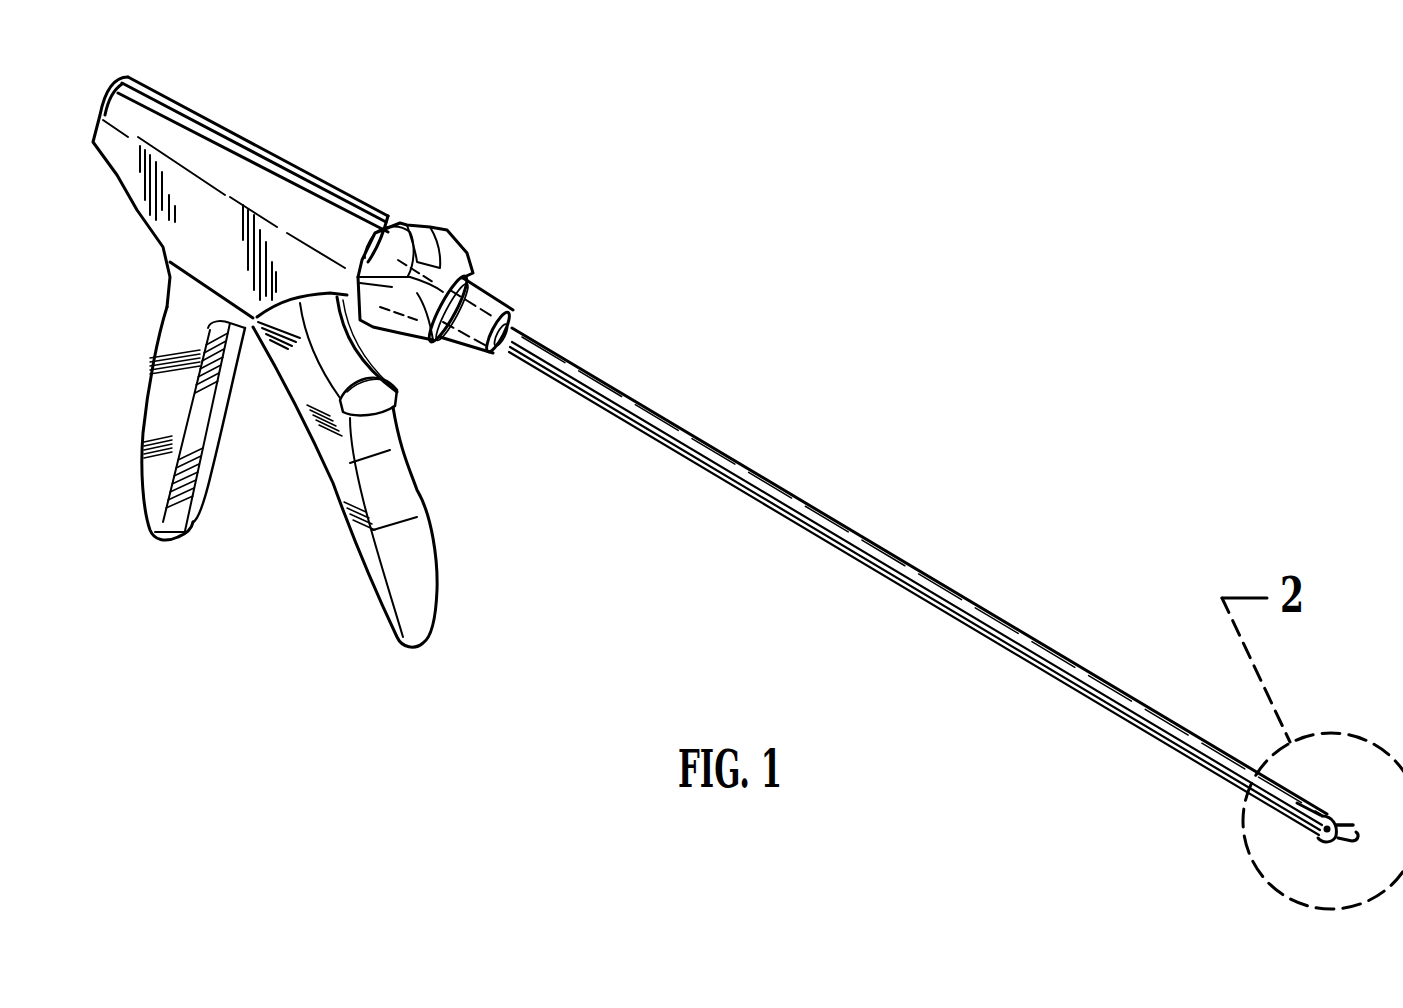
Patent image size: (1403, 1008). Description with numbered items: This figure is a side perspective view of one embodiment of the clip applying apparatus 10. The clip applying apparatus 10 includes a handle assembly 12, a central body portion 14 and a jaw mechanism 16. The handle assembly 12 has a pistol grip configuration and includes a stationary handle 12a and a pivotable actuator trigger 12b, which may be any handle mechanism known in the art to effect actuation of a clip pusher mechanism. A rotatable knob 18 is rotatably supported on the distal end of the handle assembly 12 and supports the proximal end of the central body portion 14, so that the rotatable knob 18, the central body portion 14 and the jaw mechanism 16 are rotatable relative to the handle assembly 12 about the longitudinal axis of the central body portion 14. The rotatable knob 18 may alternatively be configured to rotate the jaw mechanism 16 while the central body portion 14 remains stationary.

The clip applying apparatus 10 is at (690, 303).
The handle assembly 12 is at (301, 157).
The stationary handle 12a is at (203, 487).
The pivotable actuator trigger 12b is at (405, 491).
The central body portion 14 is at (746, 462).
The jaw mechanism 16 is at (1340, 800).
The rotatable knob 18 is at (450, 235).